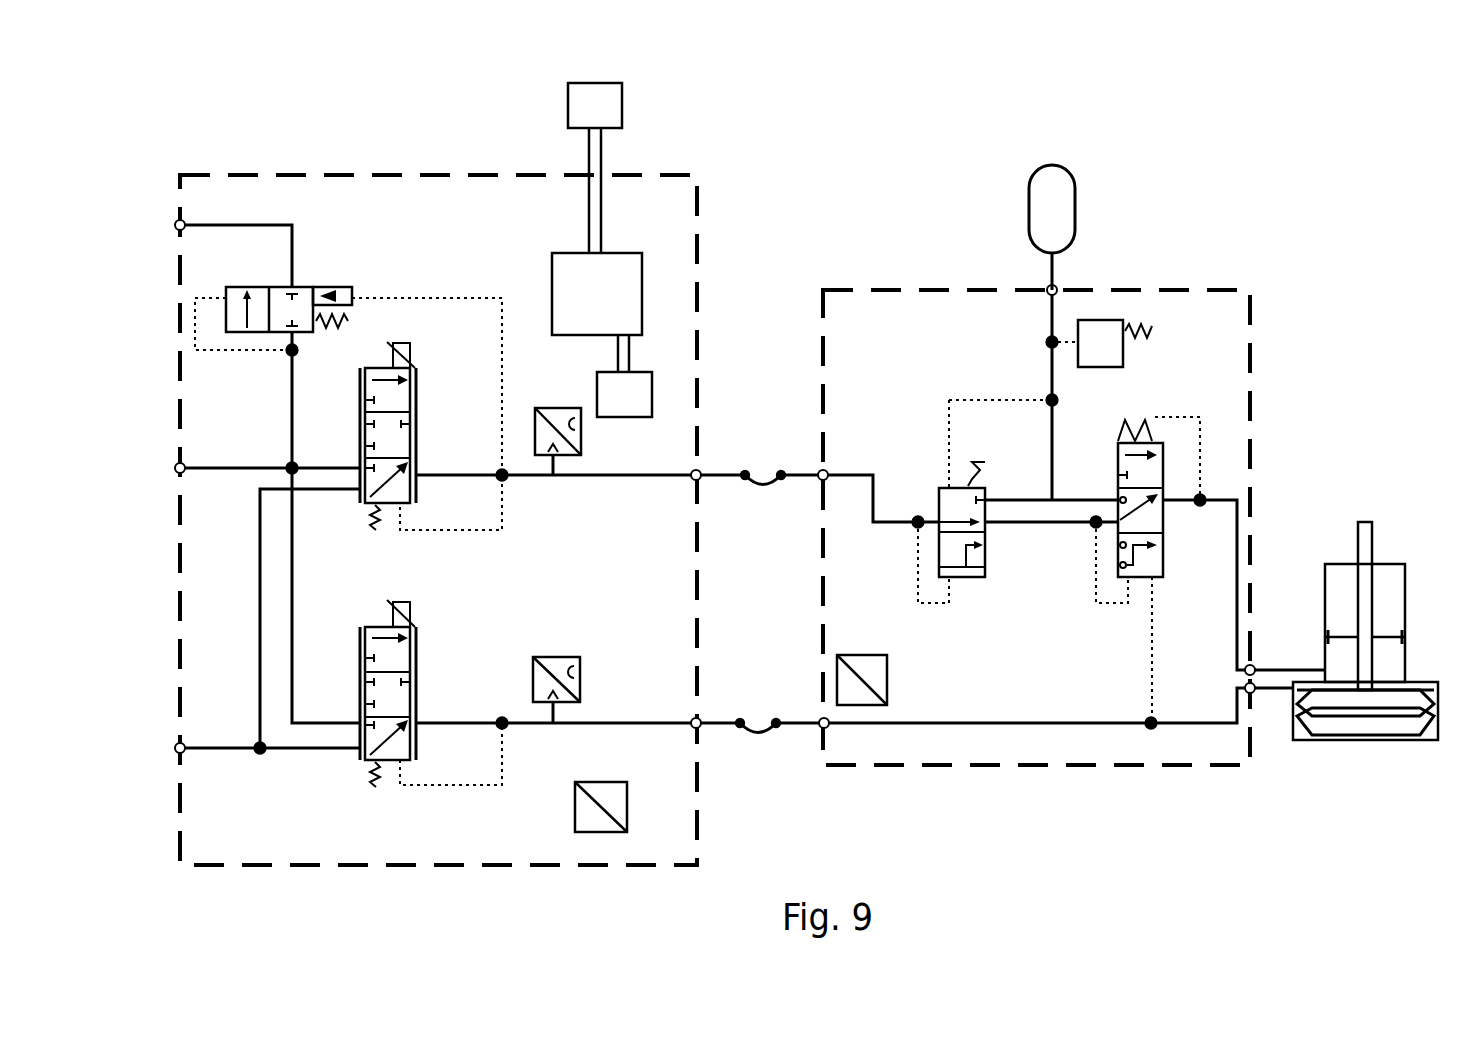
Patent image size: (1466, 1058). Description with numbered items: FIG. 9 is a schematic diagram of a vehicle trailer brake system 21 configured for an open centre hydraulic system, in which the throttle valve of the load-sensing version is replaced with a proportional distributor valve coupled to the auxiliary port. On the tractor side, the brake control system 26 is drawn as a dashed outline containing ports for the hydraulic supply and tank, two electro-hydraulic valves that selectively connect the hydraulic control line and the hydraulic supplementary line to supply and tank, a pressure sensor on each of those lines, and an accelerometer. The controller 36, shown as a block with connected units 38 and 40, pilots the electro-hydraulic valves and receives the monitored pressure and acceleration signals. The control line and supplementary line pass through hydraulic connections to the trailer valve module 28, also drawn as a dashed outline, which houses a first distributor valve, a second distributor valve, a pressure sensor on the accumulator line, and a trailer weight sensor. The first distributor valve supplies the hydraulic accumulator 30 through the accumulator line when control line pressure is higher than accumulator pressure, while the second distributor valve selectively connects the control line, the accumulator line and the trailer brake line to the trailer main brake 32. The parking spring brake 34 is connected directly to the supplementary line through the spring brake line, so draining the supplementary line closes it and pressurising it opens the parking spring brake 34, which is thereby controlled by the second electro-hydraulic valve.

The vehicle trailer brake system 21 is at (295, 110).
The brake control system 26 is at (266, 175).
The trailer valve module 28 is at (937, 288).
The hydraulic accumulator 30 is at (1040, 165).
The trailer main brake 32 is at (1375, 560).
The parking spring brake 34 is at (1320, 740).
The controller 36 is at (567, 253).
The interface unit 38 is at (588, 88).
The sensor unit 40 is at (640, 393).